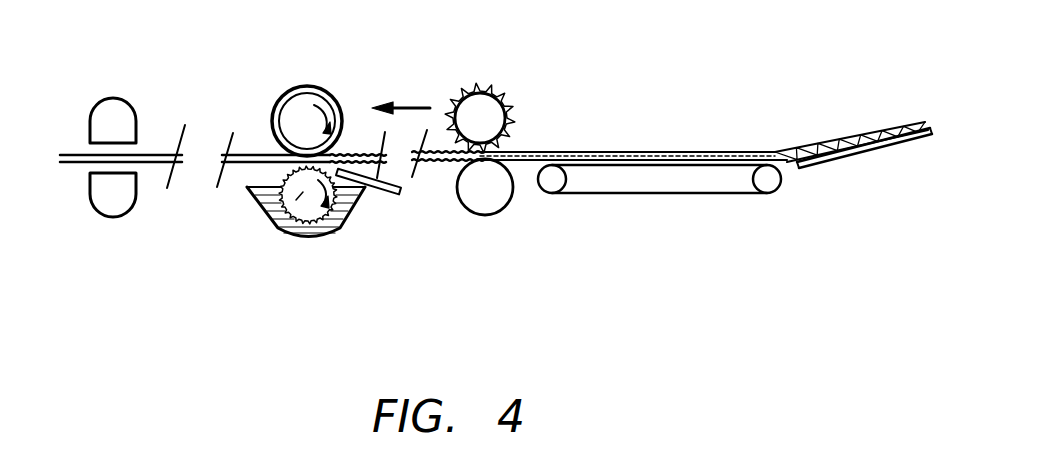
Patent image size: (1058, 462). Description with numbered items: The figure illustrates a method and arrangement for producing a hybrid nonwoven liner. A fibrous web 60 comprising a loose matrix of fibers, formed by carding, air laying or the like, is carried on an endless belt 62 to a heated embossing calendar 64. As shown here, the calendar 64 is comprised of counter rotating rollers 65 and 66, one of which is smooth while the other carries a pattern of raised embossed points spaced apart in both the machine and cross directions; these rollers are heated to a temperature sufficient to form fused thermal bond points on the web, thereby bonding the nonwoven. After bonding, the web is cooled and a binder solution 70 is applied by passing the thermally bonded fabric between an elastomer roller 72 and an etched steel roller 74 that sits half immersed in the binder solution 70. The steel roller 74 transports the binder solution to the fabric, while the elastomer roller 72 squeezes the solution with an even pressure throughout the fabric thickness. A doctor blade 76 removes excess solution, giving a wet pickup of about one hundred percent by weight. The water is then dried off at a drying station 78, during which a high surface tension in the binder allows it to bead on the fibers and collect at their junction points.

The fibrous web 60 is at (813, 142).
The endless belt 62 is at (662, 178).
The heated embossing calendar 64 is at (551, 133).
The counter rotating roller 65 is at (487, 88).
The counter rotating roller 66 is at (498, 213).
The binder solution 70 is at (352, 215).
The elastomer roller 72 is at (307, 86).
The etched steel roller 74 is at (280, 230).
The doctor blade 76 is at (397, 197).
The drying station 78 is at (118, 98).